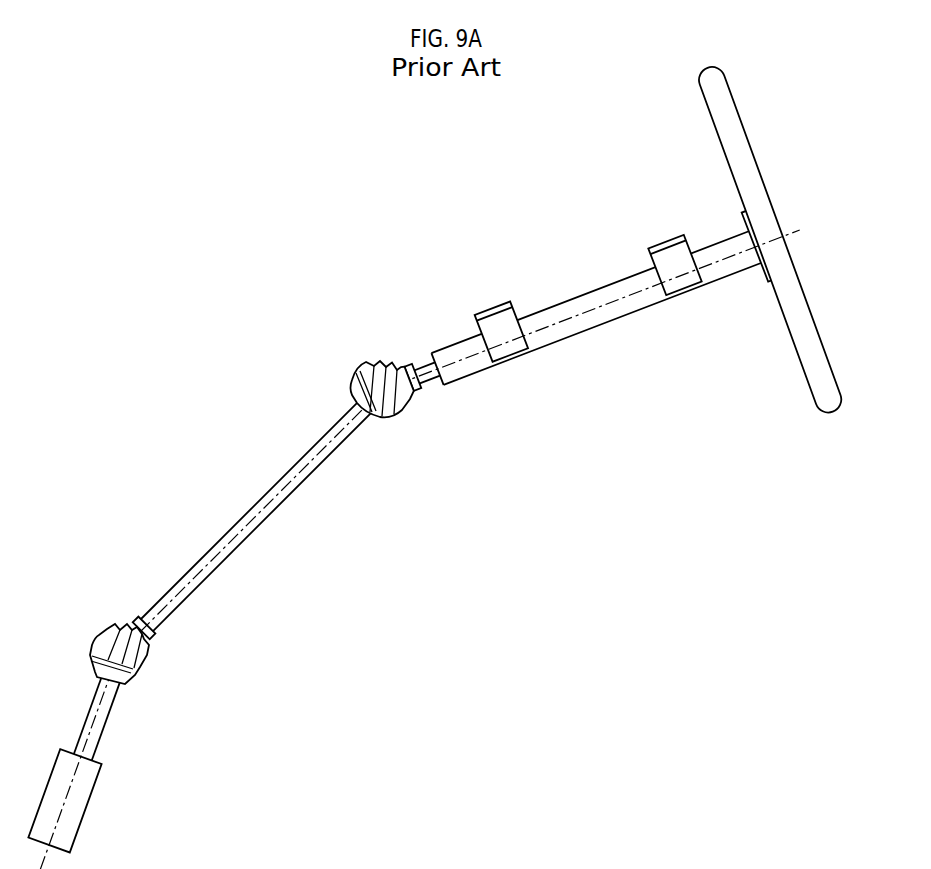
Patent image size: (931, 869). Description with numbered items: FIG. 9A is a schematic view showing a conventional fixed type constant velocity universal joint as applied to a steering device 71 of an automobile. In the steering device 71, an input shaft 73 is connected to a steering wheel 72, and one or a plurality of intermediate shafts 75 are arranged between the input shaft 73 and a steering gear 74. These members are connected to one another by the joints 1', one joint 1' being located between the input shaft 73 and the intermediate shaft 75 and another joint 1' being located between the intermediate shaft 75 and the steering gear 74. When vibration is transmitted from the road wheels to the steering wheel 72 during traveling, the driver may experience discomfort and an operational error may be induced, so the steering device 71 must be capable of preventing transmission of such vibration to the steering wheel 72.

The steering device 71 is at (462, 228).
The steering wheel 72 is at (737, 131).
The input shaft 73 is at (585, 332).
The steering gear 74 is at (88, 805).
The intermediate shaft 75 is at (110, 713).
The joint 1' is at (239, 486).